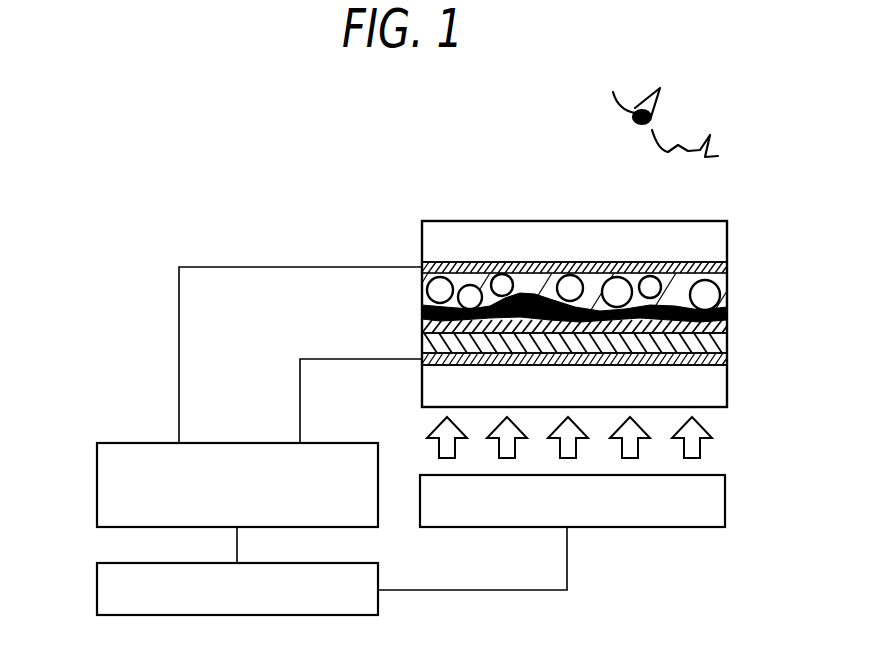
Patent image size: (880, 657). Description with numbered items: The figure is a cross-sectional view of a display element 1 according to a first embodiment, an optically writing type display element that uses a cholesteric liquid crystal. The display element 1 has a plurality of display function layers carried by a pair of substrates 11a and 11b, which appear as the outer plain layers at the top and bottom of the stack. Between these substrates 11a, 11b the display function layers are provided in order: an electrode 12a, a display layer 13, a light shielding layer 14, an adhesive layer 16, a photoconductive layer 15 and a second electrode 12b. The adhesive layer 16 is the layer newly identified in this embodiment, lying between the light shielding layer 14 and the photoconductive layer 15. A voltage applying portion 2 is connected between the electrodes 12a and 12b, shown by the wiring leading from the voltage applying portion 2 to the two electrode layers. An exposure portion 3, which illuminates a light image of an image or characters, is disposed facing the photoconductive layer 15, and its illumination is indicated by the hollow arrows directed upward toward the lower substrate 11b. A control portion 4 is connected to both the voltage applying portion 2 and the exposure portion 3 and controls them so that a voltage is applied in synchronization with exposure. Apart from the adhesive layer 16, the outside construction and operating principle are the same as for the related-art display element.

The display element 1 is at (574, 296).
The substrate 11a is at (727, 231).
The electrode 12a is at (727, 265).
The display layer 13 is at (605, 290).
The light shielding layer 14 is at (727, 308).
The adhesive layer 16 is at (727, 326).
The photoconductive layer 15 is at (727, 344).
The electrode 12b is at (727, 360).
The substrate 11b is at (727, 390).
The voltage applying portion 2 is at (97, 484).
The exposure portion 3 is at (725, 500).
The control portion 4 is at (97, 588).